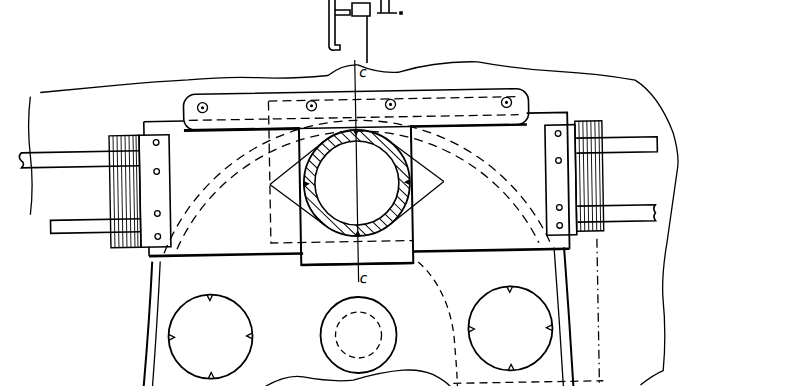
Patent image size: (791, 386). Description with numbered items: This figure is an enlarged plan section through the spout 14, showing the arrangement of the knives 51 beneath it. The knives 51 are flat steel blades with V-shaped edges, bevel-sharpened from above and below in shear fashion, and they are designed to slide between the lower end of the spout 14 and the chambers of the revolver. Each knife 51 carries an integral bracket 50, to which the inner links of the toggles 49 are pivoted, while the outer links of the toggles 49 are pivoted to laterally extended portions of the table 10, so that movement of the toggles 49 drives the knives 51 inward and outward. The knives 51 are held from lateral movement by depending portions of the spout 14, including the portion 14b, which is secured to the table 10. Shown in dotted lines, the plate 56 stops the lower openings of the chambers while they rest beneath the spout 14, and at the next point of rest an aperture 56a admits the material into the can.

The table 10 is at (390, 312).
The spout 14 is at (403, 215).
The depending portion of the spout 14b is at (470, 82).
The toggles 49 is at (72, 238).
The brackets 50 is at (356, 184).
The knives 51 is at (358, 211).
The plate 56 is at (326, 317).
The aperture 56a is at (510, 328).